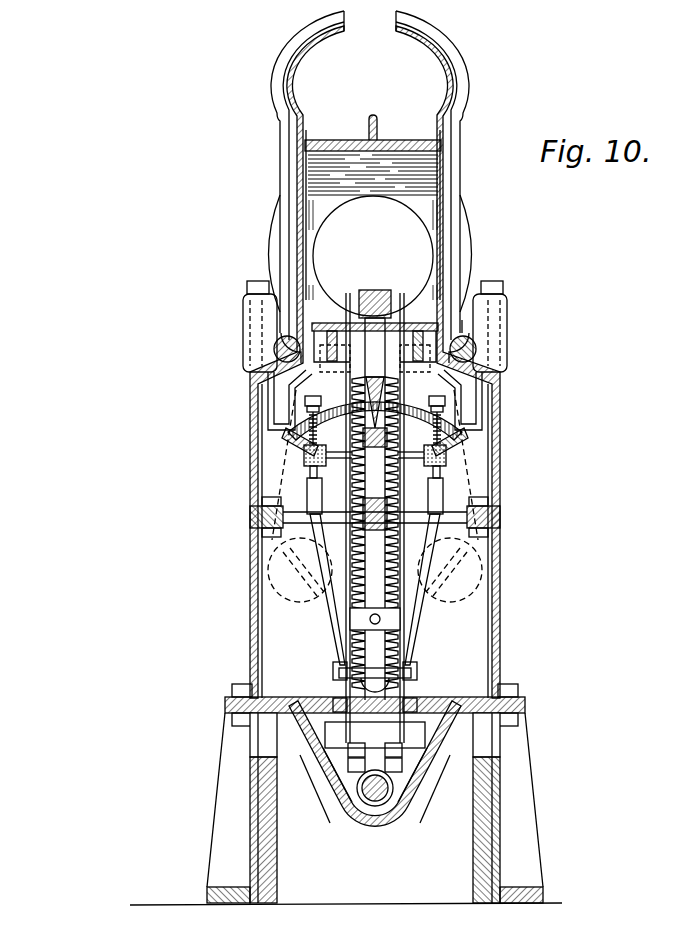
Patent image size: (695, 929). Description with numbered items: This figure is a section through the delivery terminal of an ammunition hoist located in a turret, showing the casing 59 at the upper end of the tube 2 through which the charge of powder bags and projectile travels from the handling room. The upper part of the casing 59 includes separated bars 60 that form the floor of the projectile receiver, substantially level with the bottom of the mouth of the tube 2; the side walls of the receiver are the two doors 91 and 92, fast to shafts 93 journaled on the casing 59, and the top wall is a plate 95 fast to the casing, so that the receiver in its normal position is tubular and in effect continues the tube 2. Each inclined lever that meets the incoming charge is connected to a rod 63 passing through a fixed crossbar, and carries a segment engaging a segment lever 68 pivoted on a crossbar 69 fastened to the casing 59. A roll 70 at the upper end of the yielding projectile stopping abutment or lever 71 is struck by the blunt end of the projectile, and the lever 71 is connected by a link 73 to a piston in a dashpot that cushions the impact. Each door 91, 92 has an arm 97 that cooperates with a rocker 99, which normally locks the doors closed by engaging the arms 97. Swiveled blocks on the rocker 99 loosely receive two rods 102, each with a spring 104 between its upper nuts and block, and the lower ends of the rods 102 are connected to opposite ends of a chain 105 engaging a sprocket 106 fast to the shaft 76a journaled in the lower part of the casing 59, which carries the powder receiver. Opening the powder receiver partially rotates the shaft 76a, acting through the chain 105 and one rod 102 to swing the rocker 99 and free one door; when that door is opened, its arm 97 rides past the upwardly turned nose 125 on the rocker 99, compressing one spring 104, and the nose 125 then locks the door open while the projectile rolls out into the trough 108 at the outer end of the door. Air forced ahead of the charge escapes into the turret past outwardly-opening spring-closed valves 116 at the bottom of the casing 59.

The recess or trough 108 is at (442, 52).
The plate 95 is at (347, 139).
The door 91 is at (305, 159).
The door 92 is at (440, 167).
The tube 2 is at (373, 256).
The segment lever 68 is at (339, 320).
The roll 70 is at (382, 292).
The bars 60 is at (413, 332).
The nose 125 is at (452, 328).
The shafts 93 is at (274, 348).
The spring 104 is at (446, 421).
The arm 97 is at (266, 412).
The rocker 99 is at (452, 448).
The link 73 is at (434, 469).
The crossbar 69 is at (426, 362).
The casing 59 is at (252, 628).
The rod 63 is at (355, 590).
The rod 102 is at (337, 642).
The projectile stopping abutment or lever 71 is at (406, 654).
The valves 116 is at (330, 800).
The chain 105 is at (362, 826).
The sprocket 106 is at (384, 805).
The shaft 76a is at (374, 800).